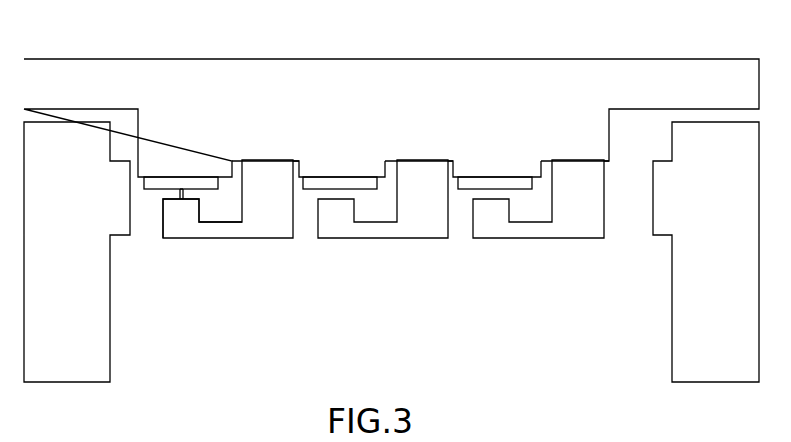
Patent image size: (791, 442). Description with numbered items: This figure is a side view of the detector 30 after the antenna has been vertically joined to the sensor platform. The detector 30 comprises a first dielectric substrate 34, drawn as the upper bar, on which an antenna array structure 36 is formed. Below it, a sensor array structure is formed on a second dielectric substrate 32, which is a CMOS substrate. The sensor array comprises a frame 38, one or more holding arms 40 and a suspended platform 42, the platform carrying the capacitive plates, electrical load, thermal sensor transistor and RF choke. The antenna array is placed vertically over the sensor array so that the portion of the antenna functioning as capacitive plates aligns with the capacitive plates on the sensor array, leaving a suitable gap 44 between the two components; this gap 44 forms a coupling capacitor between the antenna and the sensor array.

The detector 30 is at (391, 226).
The second dielectric substrate 32 is at (100, 309).
The first dielectric substrate 34 is at (393, 72).
The antenna array structure 36 is at (187, 185).
The frame 38 is at (270, 225).
The holding arm 40 is at (217, 228).
The suspended platform 42 is at (182, 203).
The gap 44 is at (178, 194).